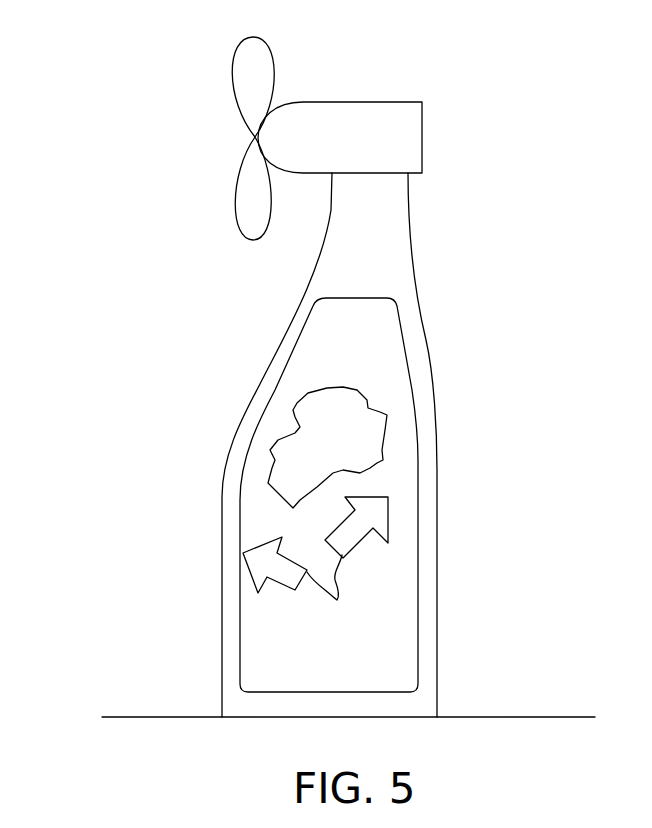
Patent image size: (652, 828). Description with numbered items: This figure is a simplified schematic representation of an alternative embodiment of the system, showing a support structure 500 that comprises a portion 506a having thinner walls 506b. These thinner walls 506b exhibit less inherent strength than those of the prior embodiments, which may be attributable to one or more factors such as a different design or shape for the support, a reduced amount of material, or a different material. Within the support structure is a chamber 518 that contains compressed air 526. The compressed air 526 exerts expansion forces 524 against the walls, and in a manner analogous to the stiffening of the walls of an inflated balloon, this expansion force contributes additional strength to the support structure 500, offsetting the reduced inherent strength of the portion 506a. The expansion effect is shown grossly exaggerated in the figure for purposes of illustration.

The support structure 500 is at (438, 303).
The portion 506a is at (535, 713).
The thinner walls 506b is at (418, 451).
The chamber 518 is at (333, 682).
The expansion forces 524 is at (320, 556).
The compressed air 526 is at (362, 457).